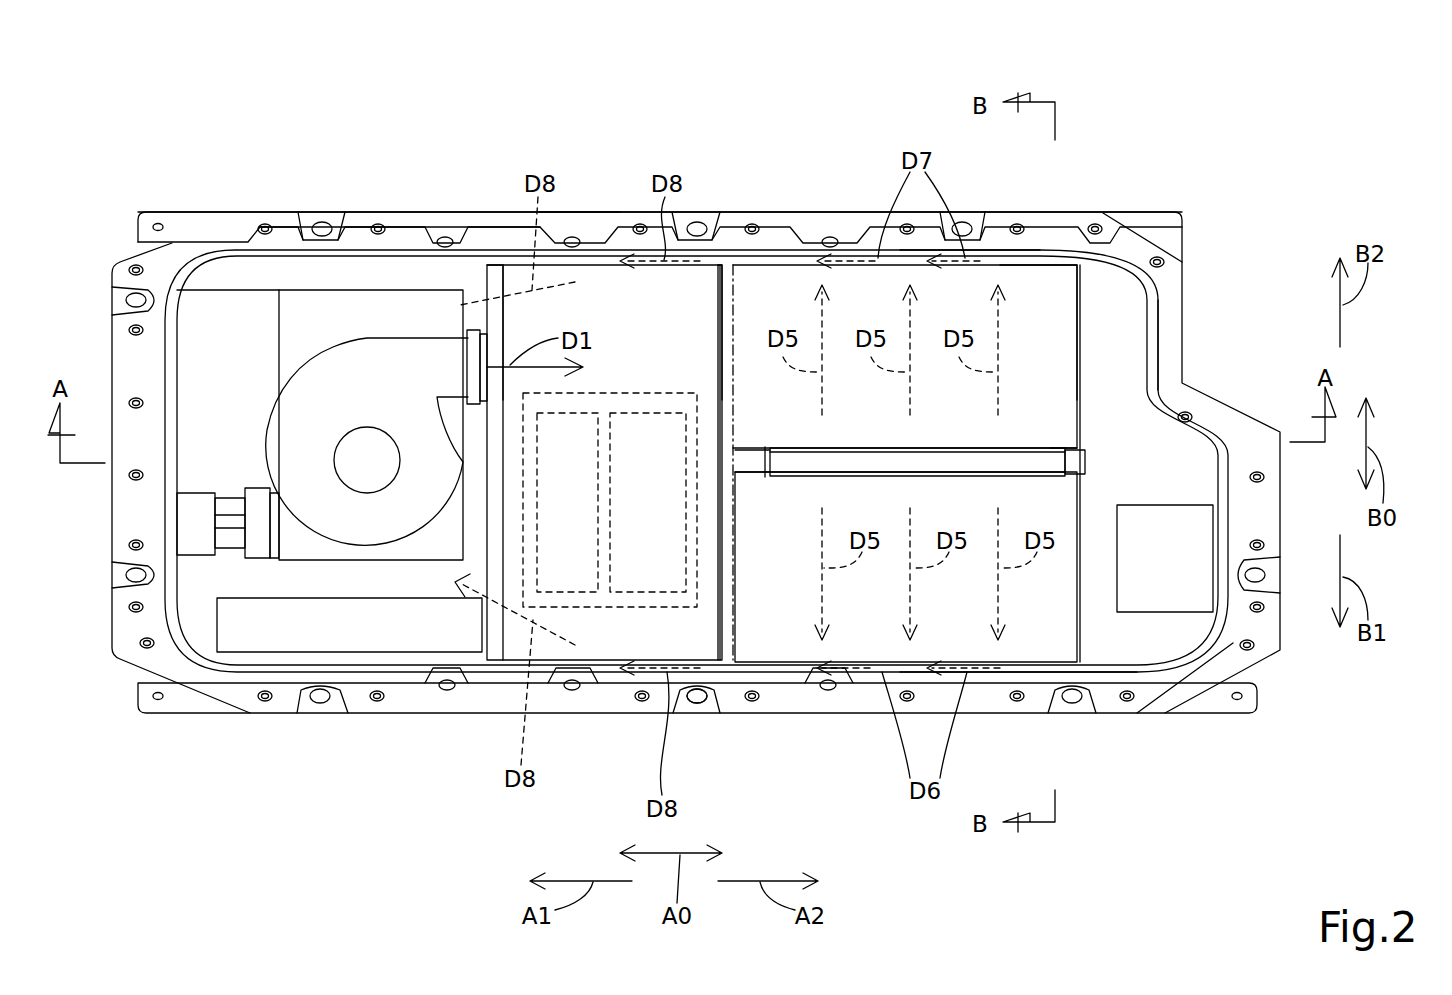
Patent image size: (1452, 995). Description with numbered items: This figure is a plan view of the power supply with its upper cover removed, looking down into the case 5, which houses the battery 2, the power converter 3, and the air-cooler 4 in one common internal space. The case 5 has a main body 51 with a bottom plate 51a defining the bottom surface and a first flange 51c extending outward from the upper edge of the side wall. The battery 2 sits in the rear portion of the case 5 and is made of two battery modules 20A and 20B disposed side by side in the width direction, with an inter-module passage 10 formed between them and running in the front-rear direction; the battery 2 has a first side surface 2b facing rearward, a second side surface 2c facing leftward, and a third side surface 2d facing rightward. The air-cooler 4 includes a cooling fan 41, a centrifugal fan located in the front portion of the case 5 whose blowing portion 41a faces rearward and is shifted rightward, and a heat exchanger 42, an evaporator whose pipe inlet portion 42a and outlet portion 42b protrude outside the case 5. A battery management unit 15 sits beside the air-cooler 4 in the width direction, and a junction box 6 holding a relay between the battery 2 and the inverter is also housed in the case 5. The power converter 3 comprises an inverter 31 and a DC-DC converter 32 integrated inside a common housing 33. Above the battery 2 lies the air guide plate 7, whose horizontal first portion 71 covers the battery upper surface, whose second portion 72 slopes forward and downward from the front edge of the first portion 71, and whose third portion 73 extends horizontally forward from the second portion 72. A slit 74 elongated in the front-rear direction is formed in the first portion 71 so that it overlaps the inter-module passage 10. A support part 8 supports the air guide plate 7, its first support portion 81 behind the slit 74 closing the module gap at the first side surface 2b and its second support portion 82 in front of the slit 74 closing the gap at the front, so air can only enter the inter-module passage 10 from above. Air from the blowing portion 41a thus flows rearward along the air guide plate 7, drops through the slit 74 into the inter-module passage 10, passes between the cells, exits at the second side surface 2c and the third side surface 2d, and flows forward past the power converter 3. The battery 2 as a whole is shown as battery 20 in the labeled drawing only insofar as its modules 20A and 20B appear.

The battery 2 is at (696, 462).
The first side surface 2b is at (1081, 318).
The second side surface 2c is at (1035, 673).
The third side surface 2d is at (1036, 265).
The power converter 3 is at (605, 464).
The air-cooler 4 is at (359, 480).
The case 5 is at (277, 208).
The junction box 6 is at (1161, 613).
The air guide plate 7 is at (992, 404).
The support part 8 is at (966, 408).
The inter-module passage 10 is at (787, 474).
The battery management unit 15 is at (390, 652).
The partition 20 is at (784, 448).
The battery module 20A is at (724, 662).
The battery module 20B is at (736, 262).
The inverter 31 is at (694, 731).
The DC-DC converter 32 is at (590, 594).
The housing 33 is at (610, 535).
The cooling fan 41 is at (365, 332).
The blowing portion 41a is at (455, 312).
The heat exchanger 42 is at (244, 621).
The inlet portion 42a is at (228, 556).
The outlet portion 42b is at (230, 493).
The main body 51 is at (330, 212).
The bottom plate 51a is at (240, 290).
The first flange 51c is at (575, 212).
The first portion 71 is at (1060, 287).
The second portion 72 is at (703, 305).
The third portion 73 is at (495, 265).
The slit 74 is at (1037, 452).
The first support portion 81 is at (1085, 462).
The second support portion 82 is at (740, 452).